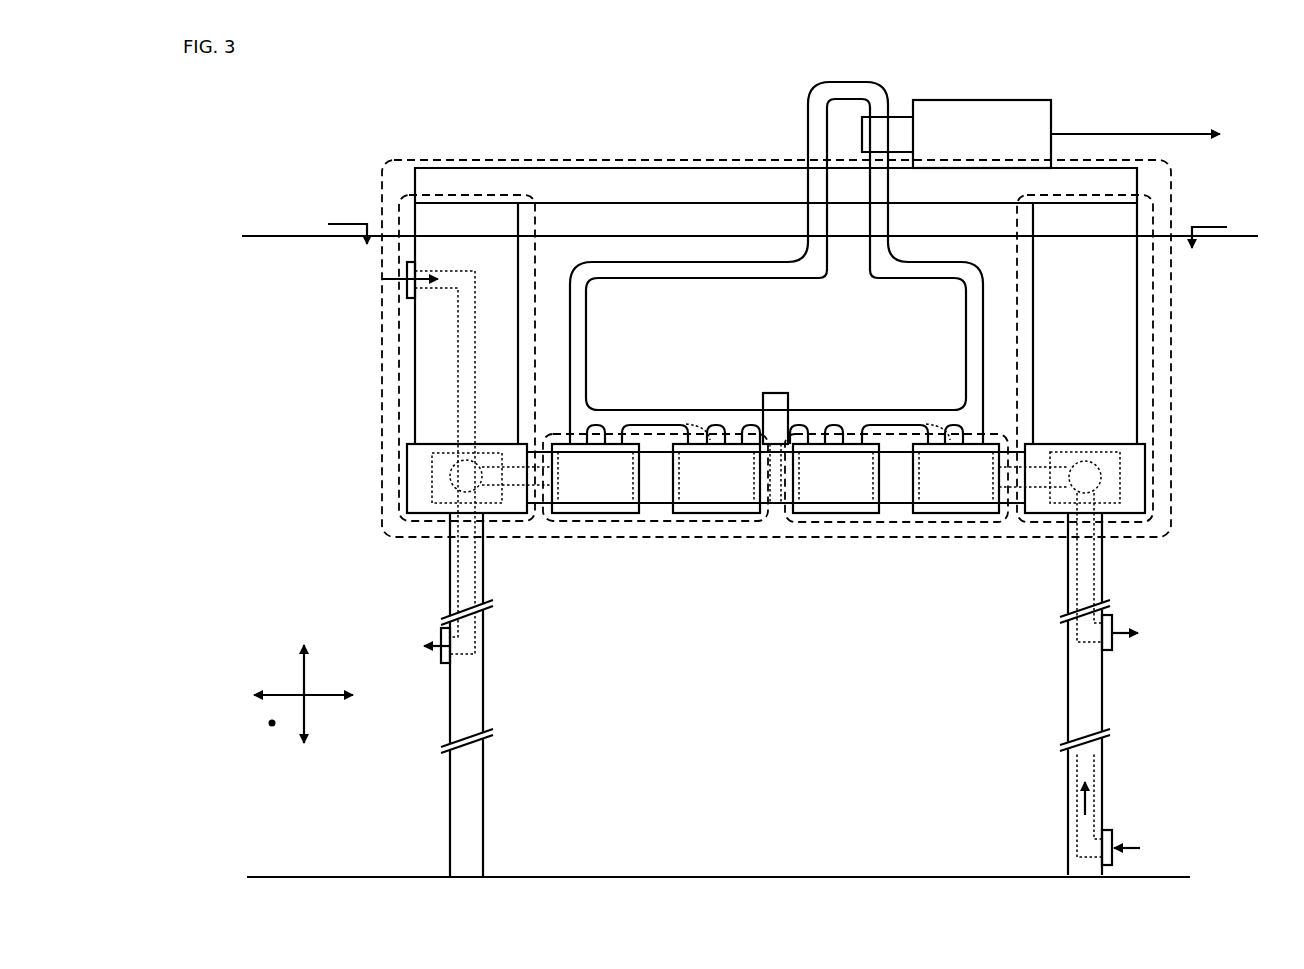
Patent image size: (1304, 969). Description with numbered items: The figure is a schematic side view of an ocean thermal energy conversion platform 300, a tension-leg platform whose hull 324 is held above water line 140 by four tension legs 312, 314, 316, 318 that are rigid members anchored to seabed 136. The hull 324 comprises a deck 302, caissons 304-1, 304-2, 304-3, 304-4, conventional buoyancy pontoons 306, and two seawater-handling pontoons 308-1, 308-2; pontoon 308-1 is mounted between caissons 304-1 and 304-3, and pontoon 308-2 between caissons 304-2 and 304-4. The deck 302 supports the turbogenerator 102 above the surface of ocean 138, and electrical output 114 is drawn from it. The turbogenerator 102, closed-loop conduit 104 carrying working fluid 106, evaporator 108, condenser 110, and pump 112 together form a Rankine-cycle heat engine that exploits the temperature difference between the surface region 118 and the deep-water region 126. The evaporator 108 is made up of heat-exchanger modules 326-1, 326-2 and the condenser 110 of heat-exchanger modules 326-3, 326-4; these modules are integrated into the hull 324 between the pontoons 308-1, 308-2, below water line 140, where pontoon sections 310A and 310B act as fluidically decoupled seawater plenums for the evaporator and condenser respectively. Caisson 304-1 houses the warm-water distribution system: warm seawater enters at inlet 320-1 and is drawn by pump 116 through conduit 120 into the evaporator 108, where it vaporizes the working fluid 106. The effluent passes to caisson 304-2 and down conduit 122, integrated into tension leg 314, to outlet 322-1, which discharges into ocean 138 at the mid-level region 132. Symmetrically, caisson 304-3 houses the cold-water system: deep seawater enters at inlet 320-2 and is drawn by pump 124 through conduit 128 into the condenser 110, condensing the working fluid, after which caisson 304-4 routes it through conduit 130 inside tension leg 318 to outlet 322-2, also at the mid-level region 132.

The platform 300 is at (416, 87).
The turbogenerator 102 is at (1000, 100).
The power output 114 is at (1178, 134).
The hull 324 is at (725, 160).
The deck 302 is at (776, 306).
The water line 140 is at (292, 236).
The closed-loop conduit 104 is at (776, 263).
The working fluid 106 is at (758, 264).
The evaporator 108 is at (668, 432).
The condenser 110 is at (897, 432).
The pump 112 is at (778, 393).
The pump 116 is at (467, 477).
The conduit 120 is at (477, 471).
The conduit 122 is at (476, 622).
The pump 124 is at (1085, 477).
The conduit 128 is at (1085, 753).
The conduit 130 is at (1085, 632).
The pontoons 306 is at (776, 457).
The caisson 304-1 is at (375, 358).
The caisson 304-2 is at (398, 400).
The caisson 304-3 is at (1138, 358).
The caisson 304-4 is at (1153, 365).
The pontoon 308-1 is at (649, 541).
The pontoon 308-2 is at (902, 521).
The pontoon section 310A is at (649, 521).
The pontoon section 310B is at (902, 521).
The heat-exchanger module 326-1 is at (595, 478).
The heat-exchanger module 326-2 is at (716, 478).
The heat-exchanger module 326-3 is at (836, 478).
The heat-exchanger module 326-4 is at (956, 478).
The tension leg 312 is at (520, 695).
The tension leg 314 is at (483, 787).
The tension leg 316 is at (1139, 694).
The tension leg 318 is at (1102, 710).
The inlet 320-1 is at (419, 278).
The inlet 320-2 is at (1112, 835).
The outlet 322-1 is at (441, 633).
The outlet 322-2 is at (1112, 620).
The surface region 118 is at (275, 300).
The ocean 138 is at (1240, 306).
The mid-level region 132 is at (771, 675).
The deep-water region 126 is at (910, 838).
The seabed 136 is at (387, 875).